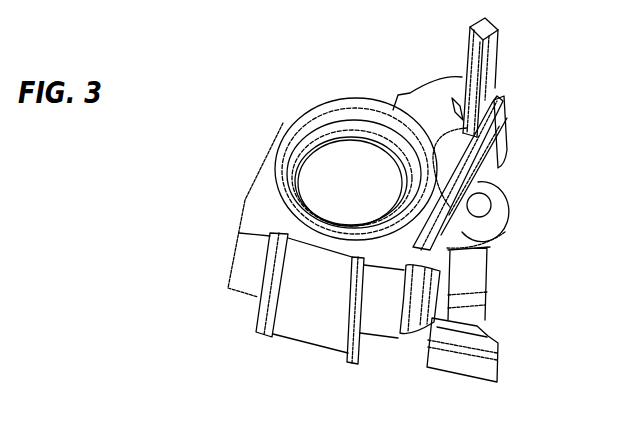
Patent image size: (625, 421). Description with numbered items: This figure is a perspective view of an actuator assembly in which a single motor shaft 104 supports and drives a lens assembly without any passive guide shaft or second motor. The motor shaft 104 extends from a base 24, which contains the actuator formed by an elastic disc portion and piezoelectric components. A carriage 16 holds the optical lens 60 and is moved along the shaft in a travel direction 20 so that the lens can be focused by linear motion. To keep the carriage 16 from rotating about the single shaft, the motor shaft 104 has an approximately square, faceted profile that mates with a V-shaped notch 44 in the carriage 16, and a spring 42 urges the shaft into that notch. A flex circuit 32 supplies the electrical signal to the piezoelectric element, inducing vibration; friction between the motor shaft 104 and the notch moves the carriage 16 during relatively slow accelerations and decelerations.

The carriage 16 is at (263, 208).
The optical lens 60 is at (332, 158).
The motor shaft 104 is at (483, 70).
The V-shaped notch 44 is at (452, 108).
The spring 42 is at (450, 183).
The flex circuit 32 is at (470, 285).
The base 24 is at (497, 193).
The travel direction 20 is at (583, 57).